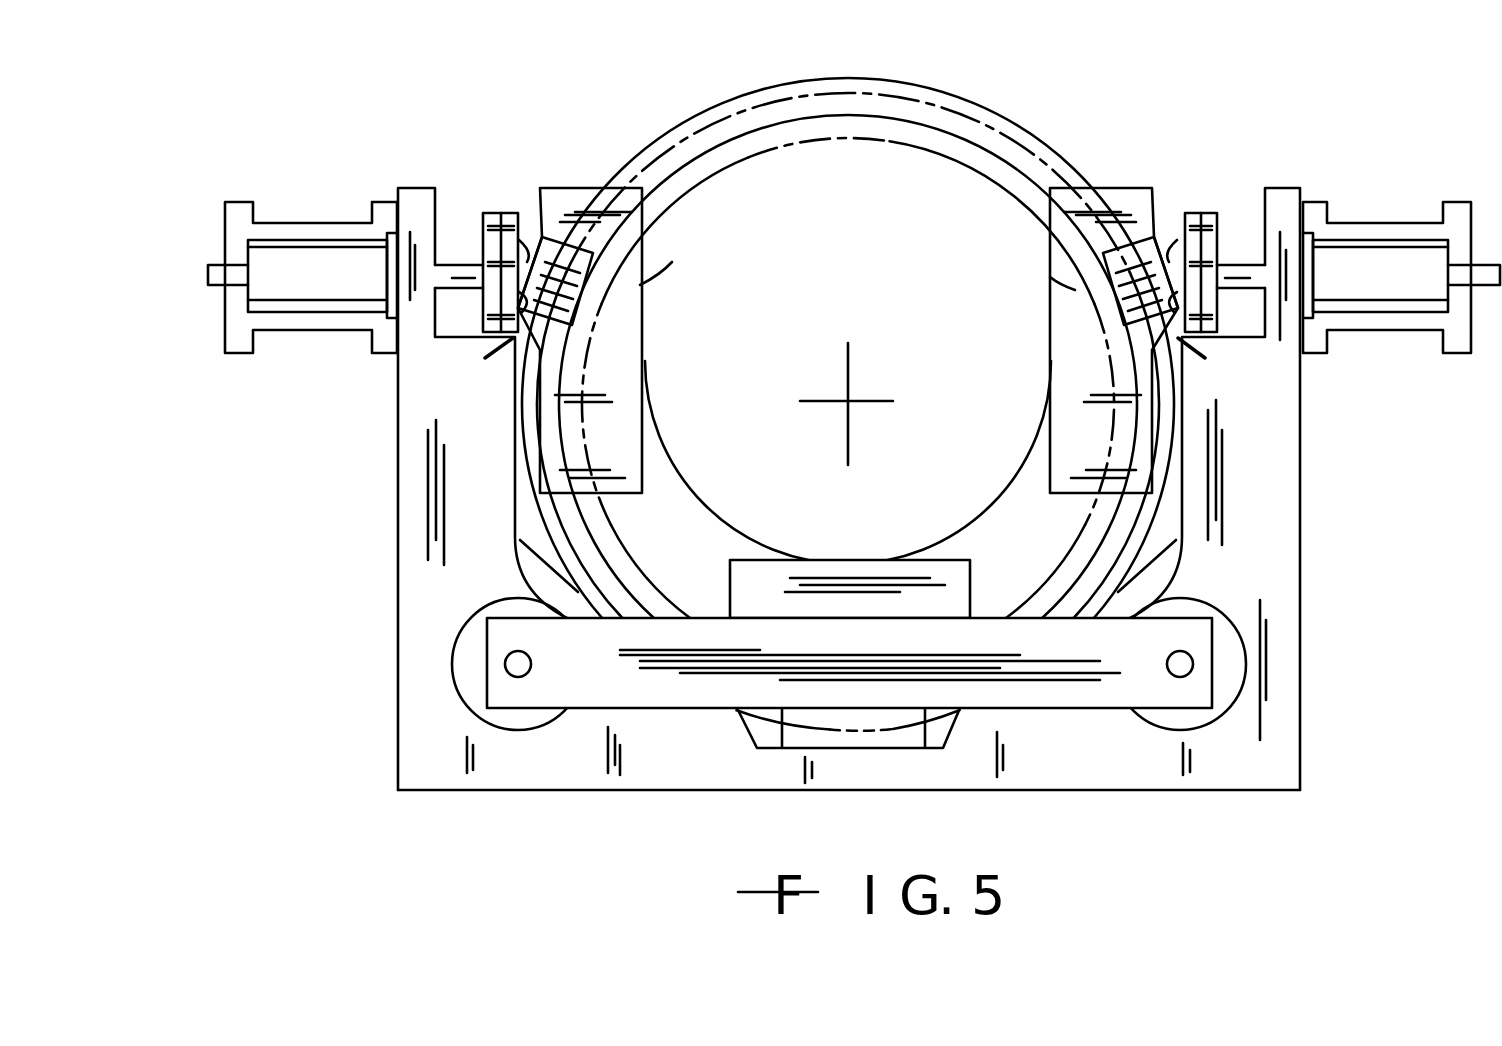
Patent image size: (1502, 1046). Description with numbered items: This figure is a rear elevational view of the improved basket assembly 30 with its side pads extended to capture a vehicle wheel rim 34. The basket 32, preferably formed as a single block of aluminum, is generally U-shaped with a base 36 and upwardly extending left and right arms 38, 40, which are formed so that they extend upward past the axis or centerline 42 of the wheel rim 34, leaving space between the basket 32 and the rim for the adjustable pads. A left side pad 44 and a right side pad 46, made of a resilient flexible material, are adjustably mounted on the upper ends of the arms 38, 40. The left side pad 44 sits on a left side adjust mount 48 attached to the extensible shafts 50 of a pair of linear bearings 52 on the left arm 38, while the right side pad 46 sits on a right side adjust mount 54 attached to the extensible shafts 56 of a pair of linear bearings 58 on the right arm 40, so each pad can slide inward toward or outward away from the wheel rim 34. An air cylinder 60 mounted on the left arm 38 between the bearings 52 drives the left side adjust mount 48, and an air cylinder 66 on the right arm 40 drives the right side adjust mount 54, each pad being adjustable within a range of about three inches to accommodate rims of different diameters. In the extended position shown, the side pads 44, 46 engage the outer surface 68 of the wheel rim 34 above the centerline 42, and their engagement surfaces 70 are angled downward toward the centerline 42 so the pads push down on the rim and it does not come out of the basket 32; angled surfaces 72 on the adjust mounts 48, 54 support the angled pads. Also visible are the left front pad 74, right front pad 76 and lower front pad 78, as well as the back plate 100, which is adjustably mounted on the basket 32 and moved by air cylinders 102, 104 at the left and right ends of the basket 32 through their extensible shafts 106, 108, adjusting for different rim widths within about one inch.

The basket assembly 30 is at (238, 147).
The basket 32 is at (850, 519).
The vehicle wheel rim 34 is at (848, 398).
The base 36 is at (680, 752).
The left arm 38 is at (410, 518).
The right arm 40 is at (1272, 440).
The centerline 42 is at (848, 400).
The left side pad 44 is at (594, 281).
The right side pad 46 is at (1142, 205).
The left side adjust mount 48 is at (523, 235).
The extensible shafts 50 is at (457, 245).
The linear bearings 52 is at (297, 258).
The right side adjust mount 54 is at (1180, 210).
The extensible shafts 56 is at (1232, 225).
The linear bearings 58 is at (1385, 215).
The air cylinder 60 is at (276, 274).
The air cylinder 66 is at (1402, 275).
The outer surface 68 is at (1038, 142).
The engagement surfaces 70 is at (640, 285).
The angled surfaces 72 is at (843, 372).
The left front pad 74 is at (592, 215).
The right front pad 76 is at (1159, 295).
The lower front pad 78 is at (880, 570).
The back plate 100 is at (818, 747).
The air cylinder 102 is at (465, 655).
The air cylinder 104 is at (1233, 656).
The extensible shaft 106 is at (517, 680).
The extensible shaft 108 is at (1180, 680).